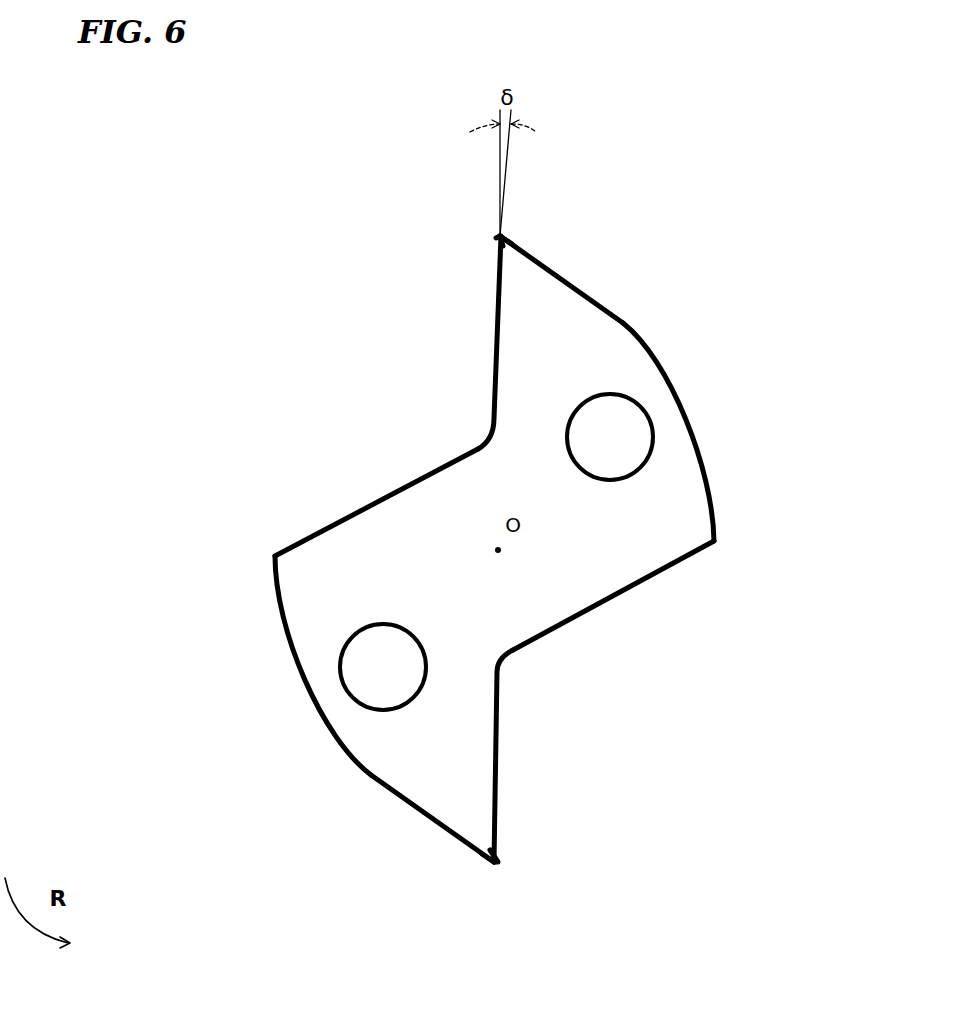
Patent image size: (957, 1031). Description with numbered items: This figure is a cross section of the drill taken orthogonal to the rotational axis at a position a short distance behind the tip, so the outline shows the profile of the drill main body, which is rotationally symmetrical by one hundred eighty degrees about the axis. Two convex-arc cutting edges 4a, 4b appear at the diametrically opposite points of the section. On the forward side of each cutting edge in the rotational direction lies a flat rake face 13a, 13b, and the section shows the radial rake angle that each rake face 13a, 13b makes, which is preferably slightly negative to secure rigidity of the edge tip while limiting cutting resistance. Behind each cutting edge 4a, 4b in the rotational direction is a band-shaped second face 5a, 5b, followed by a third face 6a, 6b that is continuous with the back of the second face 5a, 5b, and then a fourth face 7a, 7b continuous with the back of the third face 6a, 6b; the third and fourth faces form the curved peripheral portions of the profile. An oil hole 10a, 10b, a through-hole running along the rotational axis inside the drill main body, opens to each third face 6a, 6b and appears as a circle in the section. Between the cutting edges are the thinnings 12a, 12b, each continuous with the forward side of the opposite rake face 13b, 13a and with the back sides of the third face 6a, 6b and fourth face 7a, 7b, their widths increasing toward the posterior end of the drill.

The convex-arc cutting edge 4a is at (500, 236).
The second face 5a is at (507, 237).
The third face 6a is at (583, 287).
The fourth face 7a is at (692, 443).
The oil hole 10a is at (603, 443).
The thinning 12a is at (615, 596).
The rake face 13a is at (493, 332).
The convex-arc cutting edge 4b is at (495, 863).
The second face 5b is at (481, 863).
The third face 6b is at (406, 802).
The fourth face 7b is at (308, 667).
The oil hole 10b is at (363, 653).
The thinning 12b is at (368, 503).
The rake face 13b is at (498, 751).